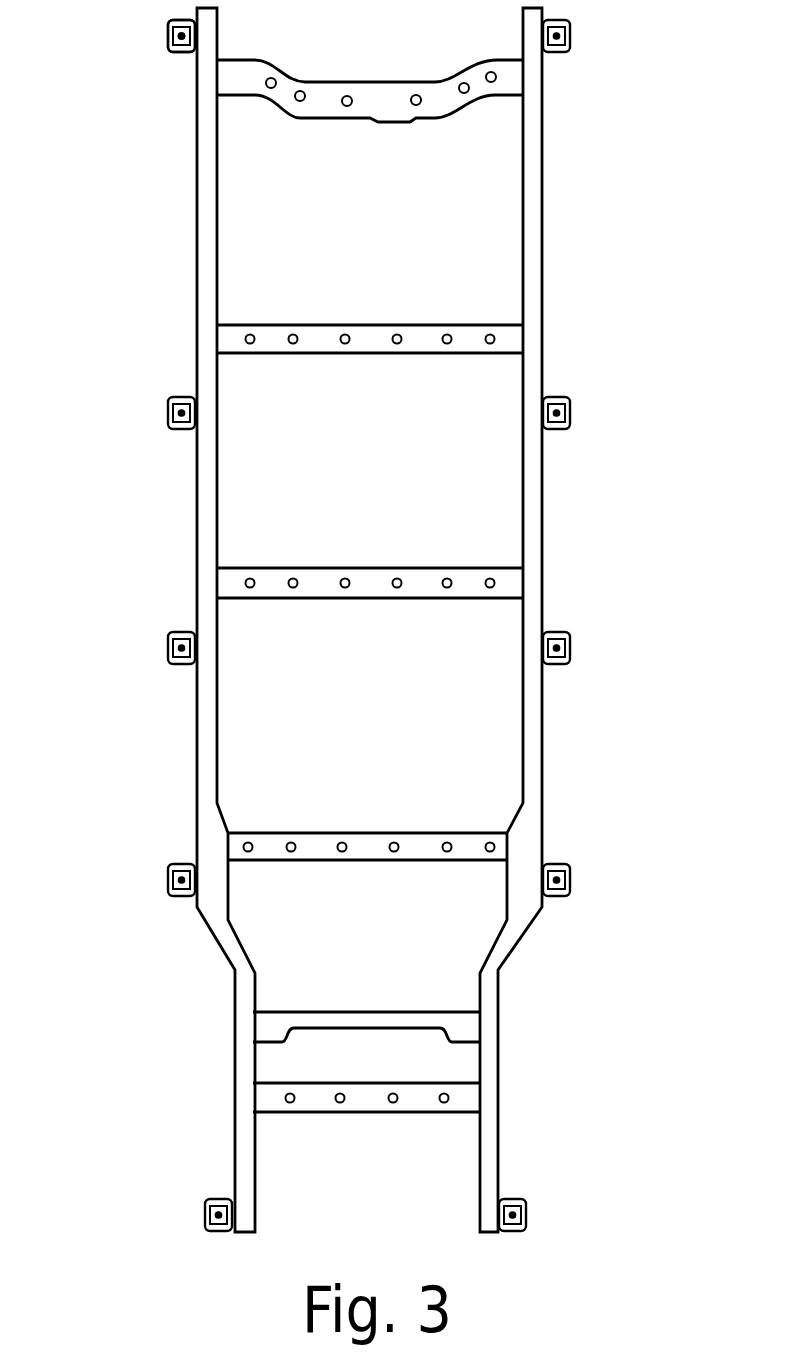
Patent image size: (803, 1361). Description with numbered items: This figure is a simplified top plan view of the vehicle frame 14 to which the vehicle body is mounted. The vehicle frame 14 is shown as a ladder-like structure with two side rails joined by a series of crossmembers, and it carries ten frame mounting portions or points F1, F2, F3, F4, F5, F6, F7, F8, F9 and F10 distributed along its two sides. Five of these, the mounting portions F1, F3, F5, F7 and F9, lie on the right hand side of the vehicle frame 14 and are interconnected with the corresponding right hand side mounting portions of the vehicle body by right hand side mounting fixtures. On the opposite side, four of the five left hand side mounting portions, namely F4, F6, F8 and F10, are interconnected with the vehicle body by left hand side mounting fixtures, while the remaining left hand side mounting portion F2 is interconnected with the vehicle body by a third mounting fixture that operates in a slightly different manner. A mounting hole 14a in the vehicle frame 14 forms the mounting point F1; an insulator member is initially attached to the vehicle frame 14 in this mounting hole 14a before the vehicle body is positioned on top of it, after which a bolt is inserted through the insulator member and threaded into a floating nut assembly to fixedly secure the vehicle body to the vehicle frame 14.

The vehicle frame 14 is at (168, 242).
The mounting hole 14a is at (175, 52).
The frame mounting portion F1 is at (168, 38).
The frame mounting portion F2 is at (570, 36).
The frame mounting portion F3 is at (168, 413).
The frame mounting portion F4 is at (570, 412).
The frame mounting portion F5 is at (168, 648).
The frame mounting portion F6 is at (570, 648).
The frame mounting portion F7 is at (168, 879).
The frame mounting portion F8 is at (570, 878).
The frame mounting portion F9 is at (205, 1213).
The frame mounting portion F10 is at (527, 1213).